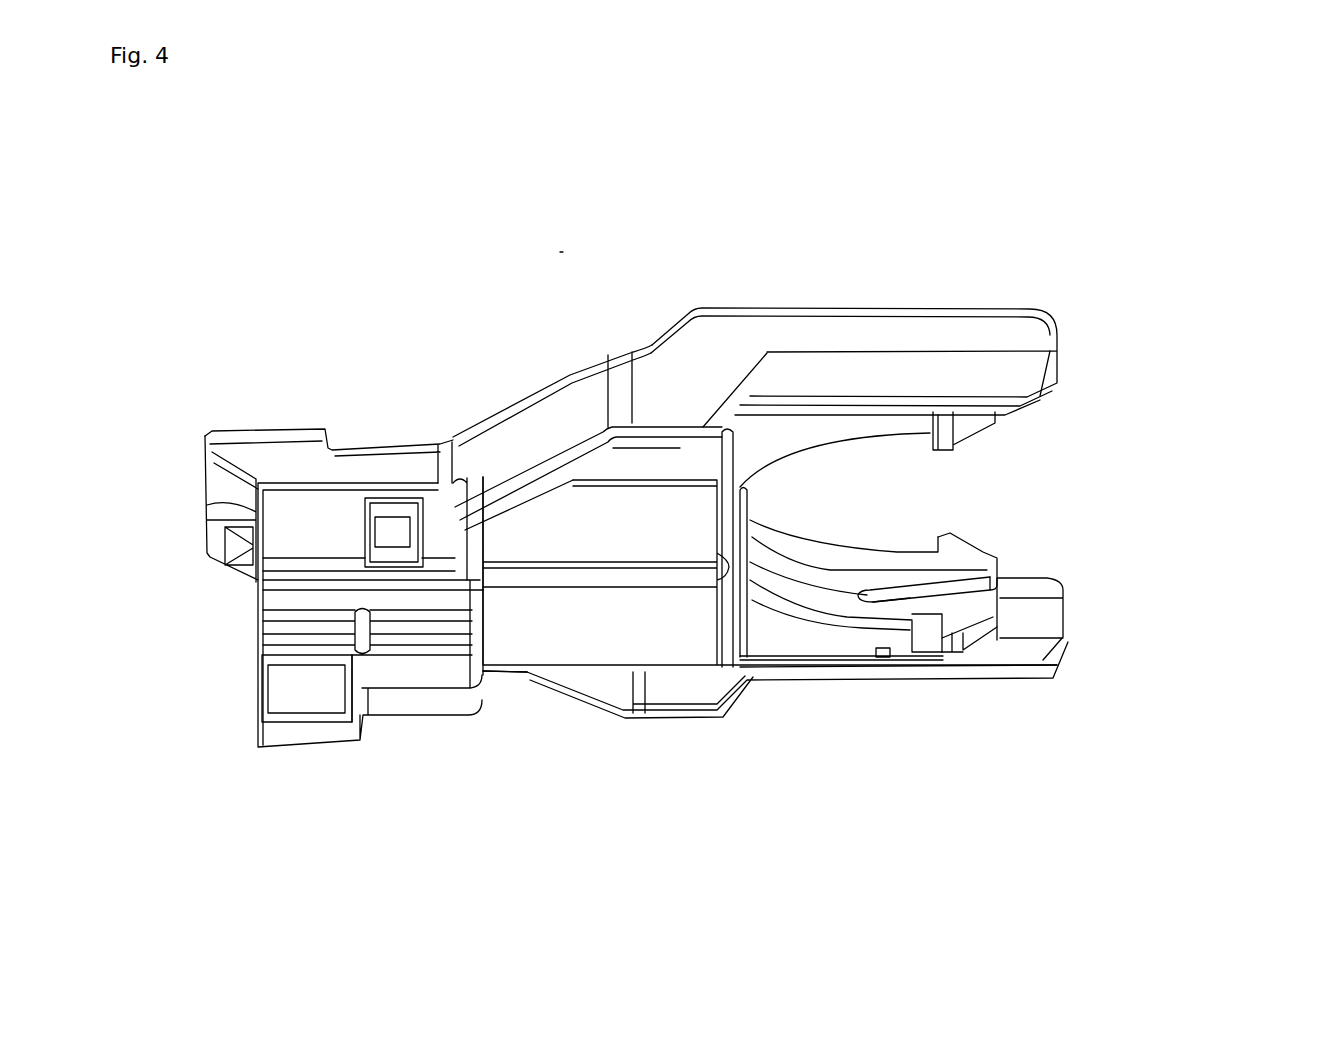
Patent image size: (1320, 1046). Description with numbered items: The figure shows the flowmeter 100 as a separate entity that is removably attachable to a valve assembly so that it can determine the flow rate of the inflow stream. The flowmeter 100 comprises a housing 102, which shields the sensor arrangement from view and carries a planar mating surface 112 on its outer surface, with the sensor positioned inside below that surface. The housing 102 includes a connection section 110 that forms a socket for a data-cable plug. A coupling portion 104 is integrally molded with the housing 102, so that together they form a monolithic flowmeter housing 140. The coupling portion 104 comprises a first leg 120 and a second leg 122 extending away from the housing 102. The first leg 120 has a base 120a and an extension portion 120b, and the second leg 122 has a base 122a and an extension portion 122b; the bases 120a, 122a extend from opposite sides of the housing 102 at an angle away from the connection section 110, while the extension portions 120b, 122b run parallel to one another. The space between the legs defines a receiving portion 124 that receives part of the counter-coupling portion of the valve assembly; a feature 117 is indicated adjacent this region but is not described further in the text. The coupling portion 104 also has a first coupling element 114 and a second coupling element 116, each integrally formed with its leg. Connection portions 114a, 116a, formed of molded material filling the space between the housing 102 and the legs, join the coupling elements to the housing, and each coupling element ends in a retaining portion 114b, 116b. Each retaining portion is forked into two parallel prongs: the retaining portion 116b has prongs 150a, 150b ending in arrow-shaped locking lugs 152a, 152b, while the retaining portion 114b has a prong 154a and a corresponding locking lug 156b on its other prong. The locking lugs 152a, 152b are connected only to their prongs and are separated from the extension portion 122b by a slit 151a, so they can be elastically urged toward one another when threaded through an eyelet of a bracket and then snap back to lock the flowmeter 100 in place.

The flowmeter 100 is at (1185, 252).
The housing 102 is at (507, 733).
The coupling portion 104 is at (908, 265).
The connection section 110 is at (318, 358).
The mating surface 112 is at (752, 515).
The first coupling element 114 is at (831, 338).
The connection portion 114a is at (682, 468).
The retaining portion 114b is at (967, 383).
The second coupling element 116 is at (770, 763).
The connection portion 116a is at (667, 690).
The retaining portion 116b is at (938, 708).
The gap 117 is at (1025, 557).
The first leg 120 is at (755, 326).
The base 120a is at (548, 420).
The extension portion 120b is at (896, 333).
The second leg 122 is at (876, 731).
The base 122a is at (623, 703).
The extension portion 122b is at (1033, 625).
The receiving portion 124 is at (984, 635).
The monolithic flowmeter housing 140 is at (563, 250).
The prong 150a is at (884, 633).
The prong 150b is at (888, 545).
The slit 151a is at (927, 658).
The locking lug 152a is at (975, 635).
The locking lug 152b is at (955, 543).
The prong 154a is at (828, 428).
The locking lug 156b is at (968, 430).